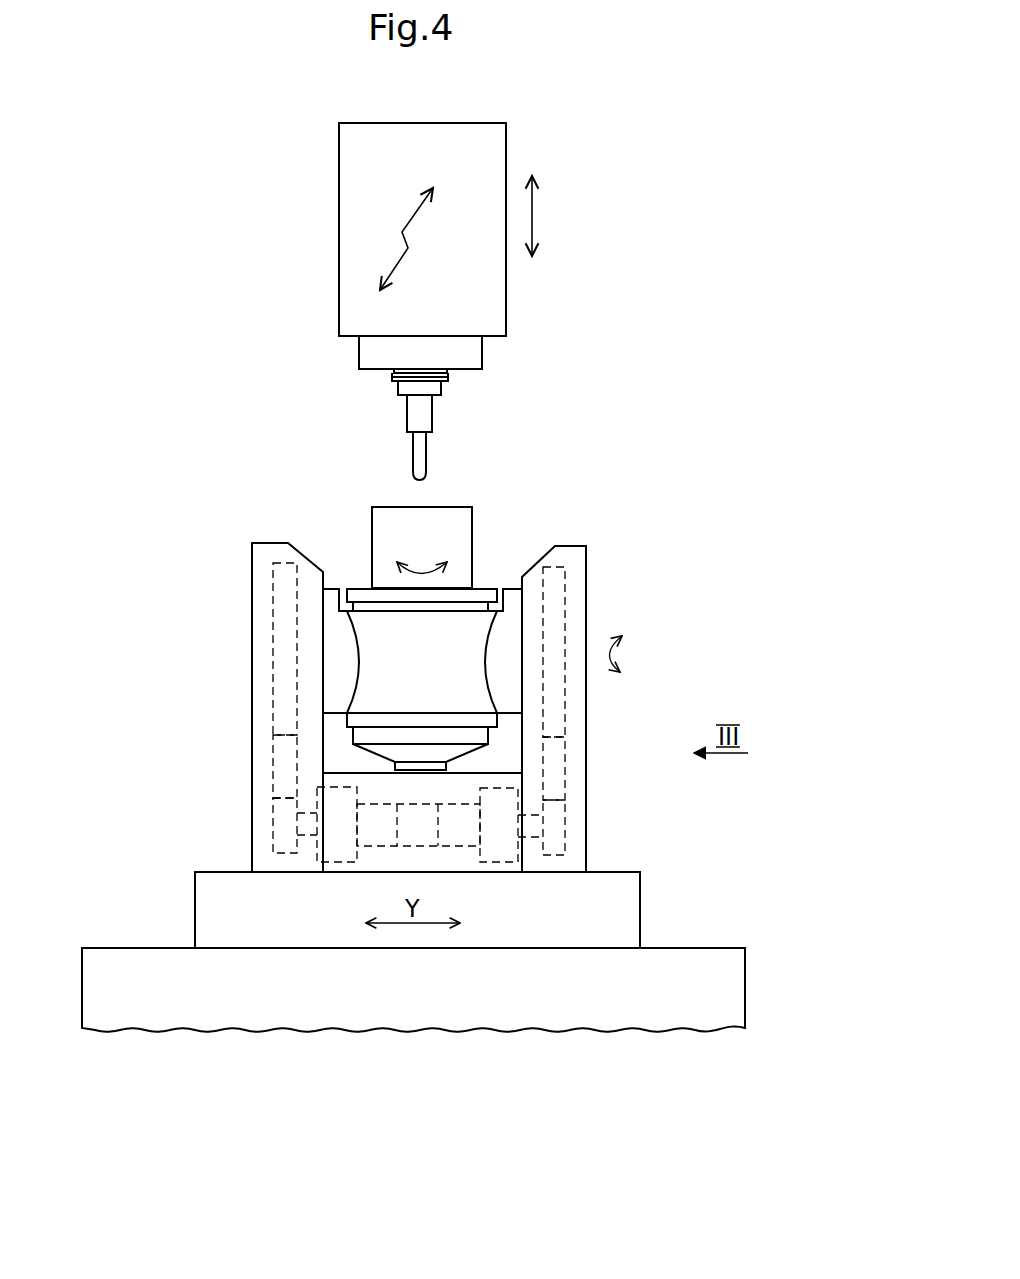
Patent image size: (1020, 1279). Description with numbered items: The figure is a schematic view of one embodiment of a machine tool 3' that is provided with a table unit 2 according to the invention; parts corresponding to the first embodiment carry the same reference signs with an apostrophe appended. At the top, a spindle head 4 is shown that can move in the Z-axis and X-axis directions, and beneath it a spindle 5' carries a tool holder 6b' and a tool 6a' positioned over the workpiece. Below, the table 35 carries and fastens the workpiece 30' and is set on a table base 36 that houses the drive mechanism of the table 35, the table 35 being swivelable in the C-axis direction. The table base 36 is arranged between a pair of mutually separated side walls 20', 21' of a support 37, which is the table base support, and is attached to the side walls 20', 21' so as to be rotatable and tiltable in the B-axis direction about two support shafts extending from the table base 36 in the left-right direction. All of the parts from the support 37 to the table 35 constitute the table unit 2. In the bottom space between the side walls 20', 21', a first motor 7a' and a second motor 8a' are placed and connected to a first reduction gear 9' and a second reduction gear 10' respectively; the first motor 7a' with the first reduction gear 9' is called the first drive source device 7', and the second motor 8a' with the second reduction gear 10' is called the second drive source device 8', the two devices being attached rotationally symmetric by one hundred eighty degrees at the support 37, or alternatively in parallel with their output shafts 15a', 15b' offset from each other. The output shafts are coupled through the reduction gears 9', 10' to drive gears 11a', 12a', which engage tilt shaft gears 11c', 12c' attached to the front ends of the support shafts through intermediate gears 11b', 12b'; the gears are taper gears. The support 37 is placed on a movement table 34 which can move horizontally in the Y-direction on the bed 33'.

The spindle head 4 is at (463, 137).
The machine tool 3' is at (534, 275).
The spindle 5' is at (459, 358).
The tool holder 6b' is at (465, 406).
The tool 6a' is at (464, 456).
The table unit 2 is at (228, 492).
The workpiece 30' is at (407, 519).
The side wall 21' is at (248, 684).
The side wall 20' is at (588, 679).
The table 35 is at (480, 590).
The table base 36 is at (497, 636).
The support 37 is at (579, 730).
The tilt shaft gear 12c' is at (235, 649).
The intermediate gear 12b' is at (233, 766).
The drive gear 12a' is at (233, 821).
The tilt shaft gear 11c' is at (610, 652).
The intermediate gear 11b' is at (611, 770).
The drive gear 11a' is at (611, 827).
The output shaft 15b' is at (257, 951).
The output shaft 15a' is at (586, 952).
The second drive source device 8' is at (349, 971).
The second reduction gear 10' is at (282, 969).
The second motor 8a' is at (337, 966).
The first drive source device 7' is at (530, 985).
The first motor 7a' is at (505, 963).
The first reduction gear 9' is at (546, 972).
The movement table 34 is at (620, 908).
The bed 33' is at (452, 990).